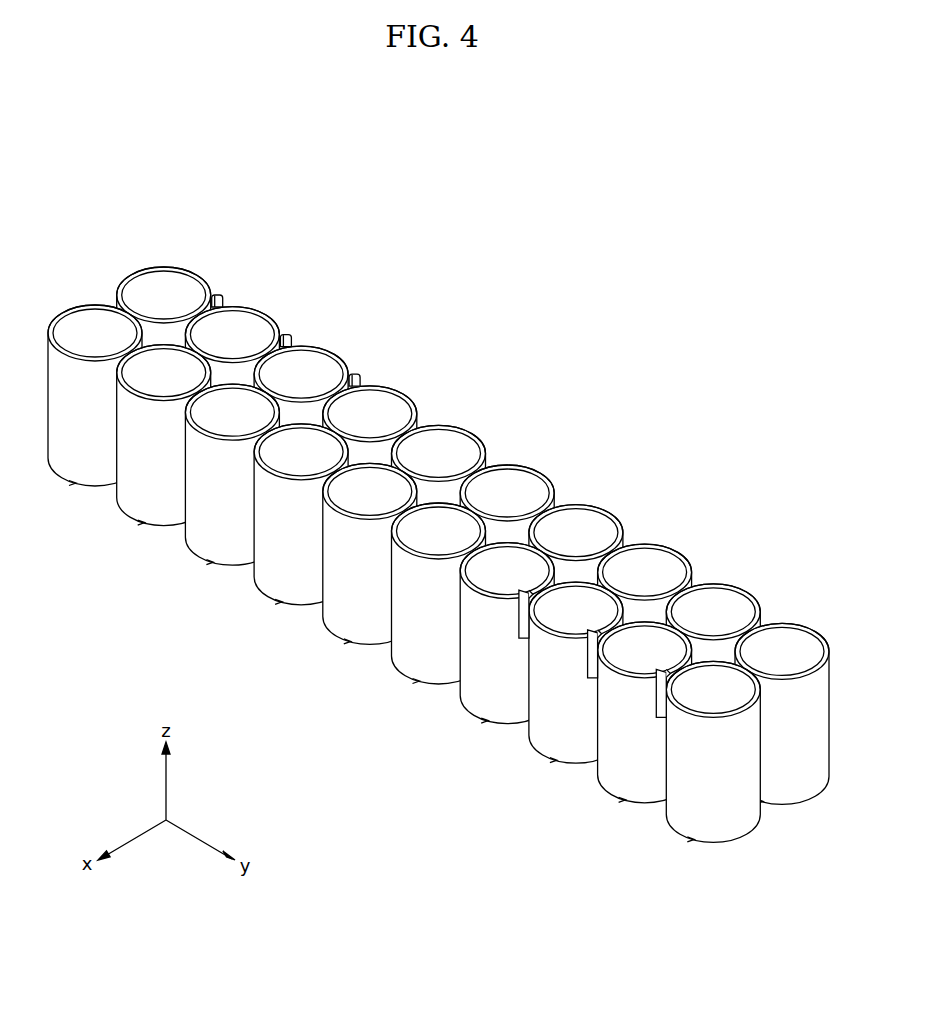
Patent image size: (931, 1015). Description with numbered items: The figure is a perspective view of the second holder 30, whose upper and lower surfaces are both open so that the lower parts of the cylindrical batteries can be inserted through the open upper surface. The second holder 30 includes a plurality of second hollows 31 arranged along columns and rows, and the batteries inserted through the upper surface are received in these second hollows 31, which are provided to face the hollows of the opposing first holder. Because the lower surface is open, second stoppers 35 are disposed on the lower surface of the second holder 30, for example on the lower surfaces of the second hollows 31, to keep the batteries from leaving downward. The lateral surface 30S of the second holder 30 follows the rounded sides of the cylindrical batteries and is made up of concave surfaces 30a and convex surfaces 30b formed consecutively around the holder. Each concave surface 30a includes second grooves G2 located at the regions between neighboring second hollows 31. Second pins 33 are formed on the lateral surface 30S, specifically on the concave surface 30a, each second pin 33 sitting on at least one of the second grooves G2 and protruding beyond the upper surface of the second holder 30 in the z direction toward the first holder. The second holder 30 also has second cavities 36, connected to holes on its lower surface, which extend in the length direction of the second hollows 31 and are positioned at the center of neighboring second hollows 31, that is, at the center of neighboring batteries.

The second holder 30 is at (438, 527).
The second hollows 31 is at (87, 328).
The second pins 33 is at (217, 296).
The second stoppers 35 is at (260, 597).
The second cavities 36 is at (165, 333).
The second grooves G2 is at (420, 423).
The concave surfaces 30a is at (391, 582).
The convex surfaces 30b is at (413, 640).
The lateral surface 30S is at (288, 686).